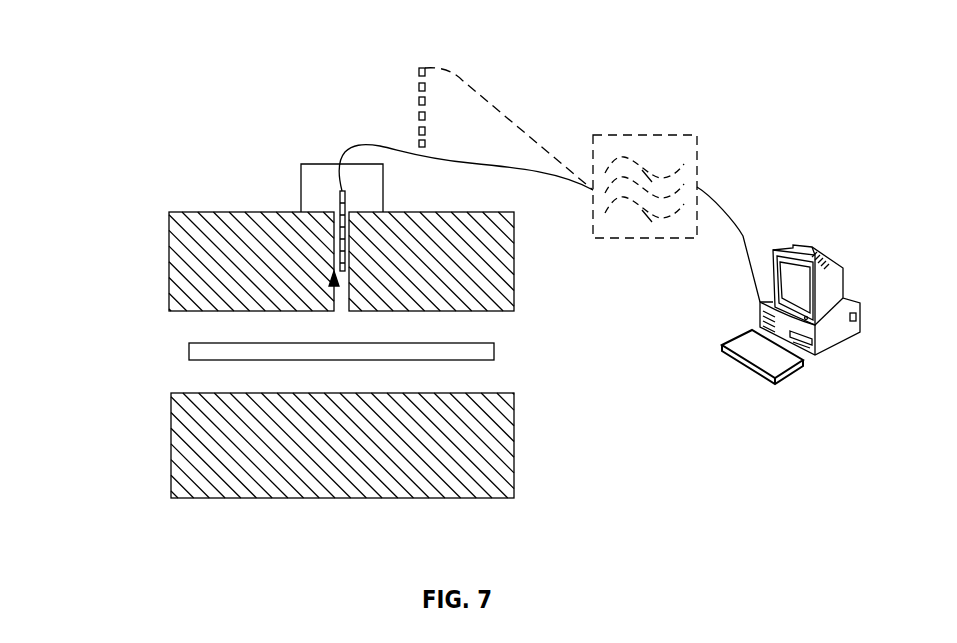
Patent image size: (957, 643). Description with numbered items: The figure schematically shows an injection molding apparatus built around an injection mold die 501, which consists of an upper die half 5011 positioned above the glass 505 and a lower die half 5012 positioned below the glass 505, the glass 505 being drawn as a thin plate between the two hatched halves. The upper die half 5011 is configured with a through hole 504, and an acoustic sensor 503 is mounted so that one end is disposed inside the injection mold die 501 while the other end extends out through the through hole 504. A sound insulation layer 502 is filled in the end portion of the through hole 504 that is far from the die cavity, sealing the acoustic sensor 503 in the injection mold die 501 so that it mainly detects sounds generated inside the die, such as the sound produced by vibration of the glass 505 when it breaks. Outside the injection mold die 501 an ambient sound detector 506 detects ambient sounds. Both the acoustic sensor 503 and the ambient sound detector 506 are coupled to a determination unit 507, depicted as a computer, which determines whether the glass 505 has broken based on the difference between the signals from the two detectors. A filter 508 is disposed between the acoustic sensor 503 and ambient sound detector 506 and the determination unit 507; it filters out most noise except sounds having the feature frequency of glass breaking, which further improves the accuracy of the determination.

The injection mold die 501 is at (100, 232).
The upper die half 5011 is at (213, 230).
The lower die half 5012 is at (213, 440).
The sound insulation layer 502 is at (330, 191).
The acoustic sensor 503 is at (342, 189).
The through hole 504 is at (331, 282).
The glass 505 is at (423, 349).
The ambient sound detector 506 is at (417, 108).
The determination unit 507 is at (825, 345).
The filter 508 is at (598, 217).